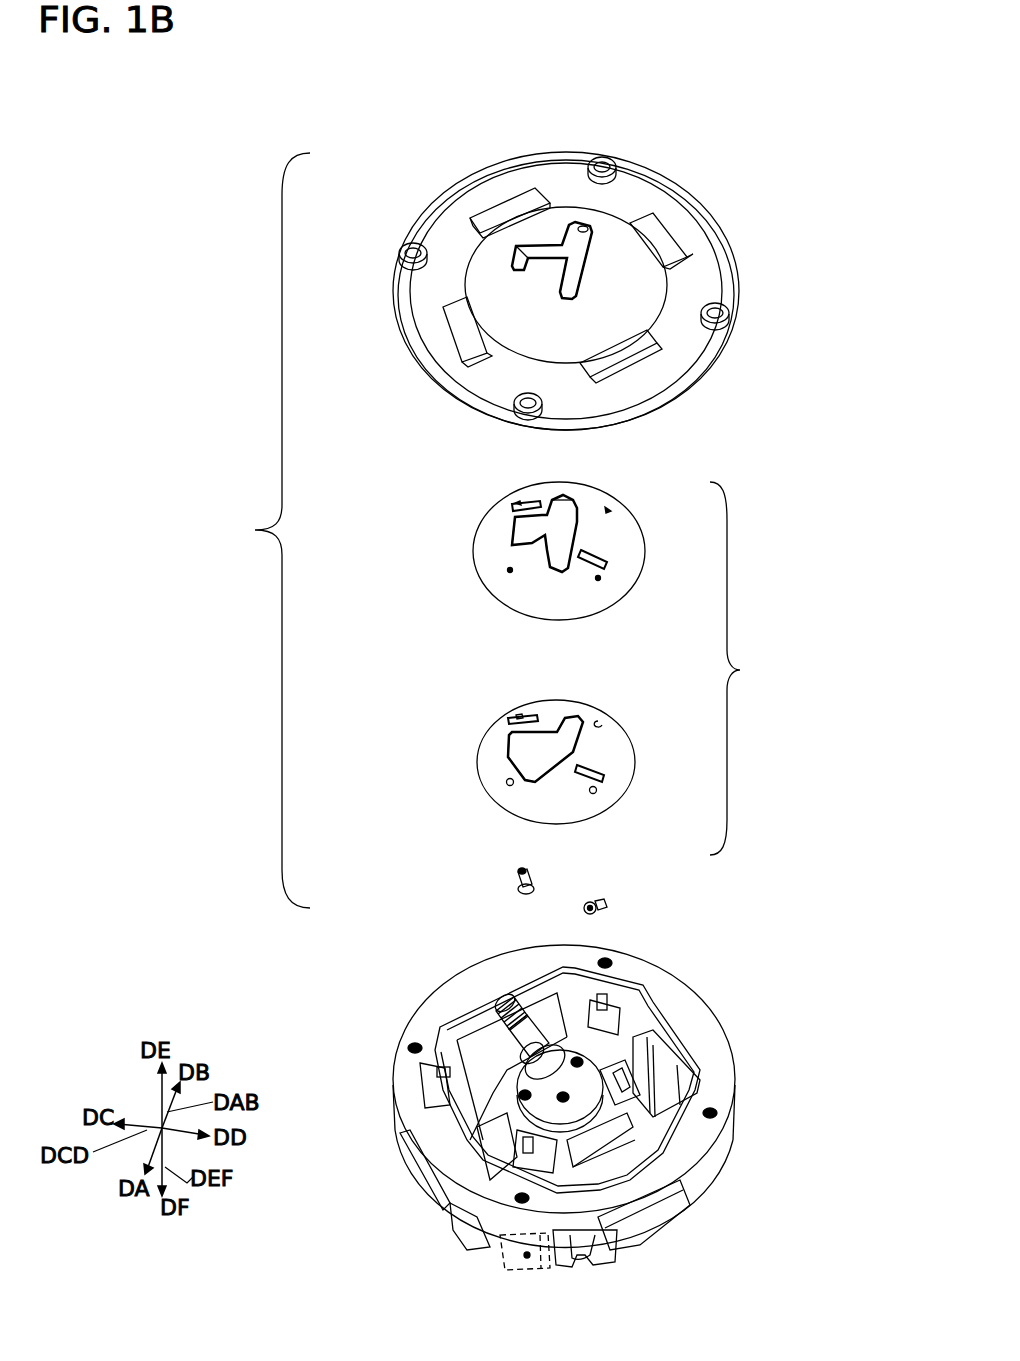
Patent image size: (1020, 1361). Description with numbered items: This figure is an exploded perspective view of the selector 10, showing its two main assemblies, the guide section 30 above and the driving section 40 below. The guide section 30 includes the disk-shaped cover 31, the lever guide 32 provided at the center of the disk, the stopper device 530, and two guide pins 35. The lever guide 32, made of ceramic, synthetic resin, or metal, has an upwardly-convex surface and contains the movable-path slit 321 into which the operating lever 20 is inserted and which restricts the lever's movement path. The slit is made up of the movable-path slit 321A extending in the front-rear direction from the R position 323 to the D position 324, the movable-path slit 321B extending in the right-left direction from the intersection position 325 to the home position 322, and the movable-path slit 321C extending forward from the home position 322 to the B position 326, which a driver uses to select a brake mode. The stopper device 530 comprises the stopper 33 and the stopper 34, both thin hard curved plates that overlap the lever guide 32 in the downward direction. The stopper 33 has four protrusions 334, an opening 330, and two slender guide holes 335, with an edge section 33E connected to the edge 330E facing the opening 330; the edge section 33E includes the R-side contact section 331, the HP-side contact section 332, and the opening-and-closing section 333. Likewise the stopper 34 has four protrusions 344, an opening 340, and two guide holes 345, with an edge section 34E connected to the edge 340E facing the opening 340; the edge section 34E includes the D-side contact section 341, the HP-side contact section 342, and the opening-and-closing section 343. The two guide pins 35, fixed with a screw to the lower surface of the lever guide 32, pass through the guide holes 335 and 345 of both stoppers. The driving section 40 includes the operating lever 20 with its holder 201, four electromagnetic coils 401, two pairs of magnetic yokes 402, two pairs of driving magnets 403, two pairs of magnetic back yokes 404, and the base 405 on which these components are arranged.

The selector 10 is at (783, 162).
The operating lever 20 is at (503, 1007).
The holder 201 is at (677, 1040).
The guide section 30 is at (268, 530).
The cover 31 is at (723, 233).
The lever guide 32 is at (628, 242).
The movable-path slit 321 is at (579, 222).
The movable-path slit 321A is at (575, 253).
The movable-path slit 321B is at (573, 250).
The movable-path slit 321C is at (573, 257).
The home position 322 is at (522, 242).
The R position 323 is at (577, 253).
The D position 324 is at (573, 297).
The intersection position 325 is at (573, 257).
The B position 326 is at (520, 265).
The stopper 33 is at (637, 547).
The opening 330 is at (562, 525).
The edge 330E is at (565, 572).
The R-side contact section 331 is at (571, 503).
The HP-side contact section 332 is at (510, 528).
The opening-and-closing section 333 is at (542, 538).
The protrusions 334 is at (517, 503).
The guide holes 335 is at (511, 506).
The edge section 33E is at (573, 567).
The stopper 34 is at (630, 758).
The opening 340 is at (563, 740).
The edge 340E is at (528, 783).
The D-side contact section 341 is at (553, 773).
The HP-side contact section 342 is at (507, 745).
The opening-and-closing section 343 is at (550, 720).
The protrusions 344 is at (518, 716).
The guide holes 345 is at (507, 719).
The edge section 34E is at (533, 788).
The guide pins 35 is at (517, 885).
The driving section 40 is at (449, 1246).
The electromagnetic coils 401 is at (482, 1037).
The magnetic yokes 402 is at (610, 1257).
The driving magnets 403 is at (673, 1093).
The magnetic back yokes 404 is at (653, 1080).
The base 405 is at (538, 1237).
The stopper device 530 is at (748, 668).